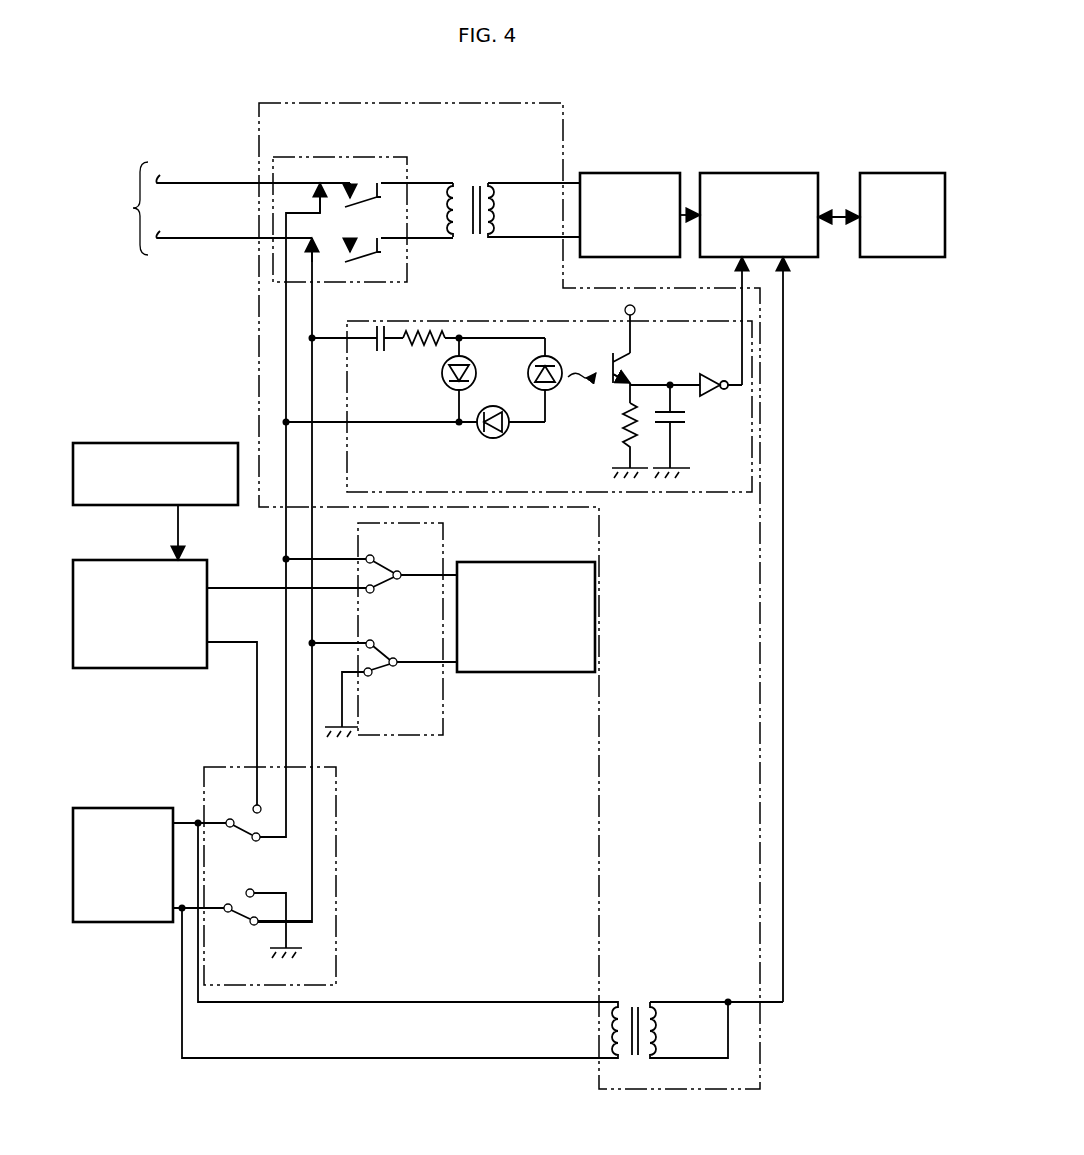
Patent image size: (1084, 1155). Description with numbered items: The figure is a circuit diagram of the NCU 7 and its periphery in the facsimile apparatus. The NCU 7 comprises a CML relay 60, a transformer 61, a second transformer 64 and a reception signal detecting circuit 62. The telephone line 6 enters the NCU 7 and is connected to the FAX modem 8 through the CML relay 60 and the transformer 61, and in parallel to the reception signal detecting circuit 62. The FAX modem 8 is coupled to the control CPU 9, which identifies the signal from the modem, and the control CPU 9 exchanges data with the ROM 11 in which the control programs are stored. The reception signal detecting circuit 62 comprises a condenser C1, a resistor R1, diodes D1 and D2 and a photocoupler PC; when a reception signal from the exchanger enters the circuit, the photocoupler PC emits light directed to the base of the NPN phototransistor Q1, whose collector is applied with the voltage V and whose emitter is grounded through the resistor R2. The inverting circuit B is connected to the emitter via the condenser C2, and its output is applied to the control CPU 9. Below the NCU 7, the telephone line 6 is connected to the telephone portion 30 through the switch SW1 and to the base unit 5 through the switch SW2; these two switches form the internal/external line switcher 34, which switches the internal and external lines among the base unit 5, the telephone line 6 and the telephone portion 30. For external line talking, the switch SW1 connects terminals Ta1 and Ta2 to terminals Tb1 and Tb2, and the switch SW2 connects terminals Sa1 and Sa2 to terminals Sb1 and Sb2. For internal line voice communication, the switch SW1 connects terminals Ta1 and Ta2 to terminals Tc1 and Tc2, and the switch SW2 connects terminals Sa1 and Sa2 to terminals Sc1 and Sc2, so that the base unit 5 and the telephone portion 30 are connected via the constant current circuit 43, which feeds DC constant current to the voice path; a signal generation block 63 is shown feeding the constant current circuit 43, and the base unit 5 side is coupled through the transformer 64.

The base unit 5 is at (160, 810).
The telephone line 6 is at (284, 212).
The NCU 7 is at (320, 118).
The FAX modem 8 is at (585, 173).
The control CPU 9 is at (764, 179).
The ROM 11 is at (906, 179).
The telephone portion 30 is at (544, 664).
The internal/external line switcher 34 is at (344, 755).
The constant current circuit 43 is at (122, 668).
The CML relay 60 is at (398, 163).
The transformer 61 is at (494, 183).
The reception signal detecting circuit 62 is at (518, 391).
The signal generation circuit 63 is at (222, 445).
The transformer 64 is at (650, 1002).
The switch SW1 is at (376, 655).
The switch SW2 is at (299, 877).
The condenser C1 is at (371, 345).
The condenser C2 is at (682, 428).
The resistor R1 is at (421, 345).
The resistor R2 is at (626, 441).
The diode D1 is at (478, 362).
The diode D2 is at (488, 439).
The photocoupler PC is at (549, 361).
The phototransistor Q1 is at (627, 363).
The inverting circuit B is at (707, 397).
The voltage V is at (639, 326).
The terminal Ta1 is at (398, 580).
The terminal Tb1 is at (375, 556).
The terminal Tc1 is at (372, 600).
The terminal Ta2 is at (395, 668).
The terminal Tb2 is at (378, 645).
The terminal Tc2 is at (369, 688).
The terminal Sa1 is at (230, 828).
The terminal Sb1 is at (262, 842).
The terminal Sc1 is at (256, 804).
The terminal Sa2 is at (228, 914).
The terminal Sb2 is at (256, 928).
The terminal Sc2 is at (255, 892).